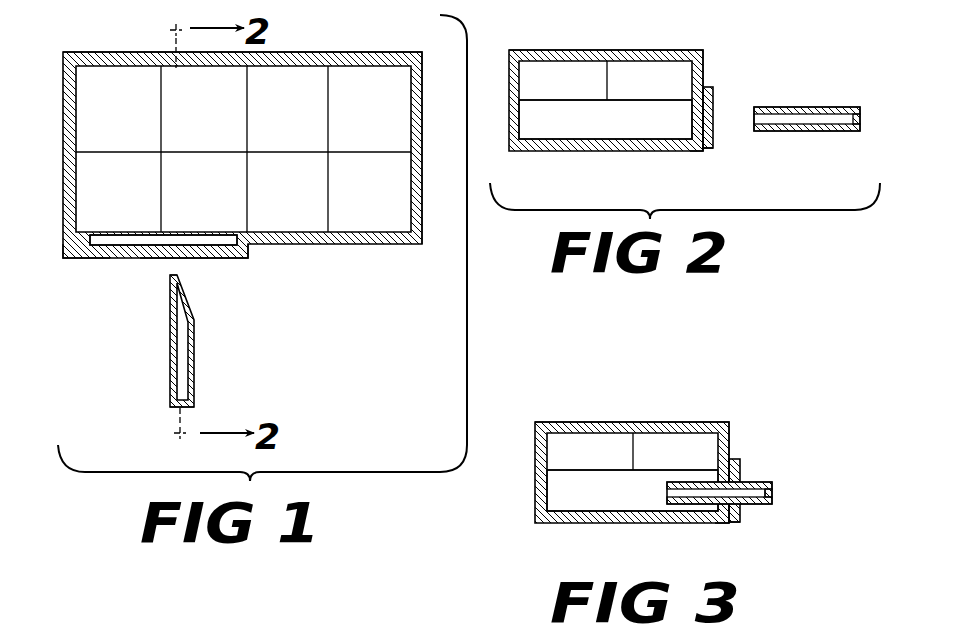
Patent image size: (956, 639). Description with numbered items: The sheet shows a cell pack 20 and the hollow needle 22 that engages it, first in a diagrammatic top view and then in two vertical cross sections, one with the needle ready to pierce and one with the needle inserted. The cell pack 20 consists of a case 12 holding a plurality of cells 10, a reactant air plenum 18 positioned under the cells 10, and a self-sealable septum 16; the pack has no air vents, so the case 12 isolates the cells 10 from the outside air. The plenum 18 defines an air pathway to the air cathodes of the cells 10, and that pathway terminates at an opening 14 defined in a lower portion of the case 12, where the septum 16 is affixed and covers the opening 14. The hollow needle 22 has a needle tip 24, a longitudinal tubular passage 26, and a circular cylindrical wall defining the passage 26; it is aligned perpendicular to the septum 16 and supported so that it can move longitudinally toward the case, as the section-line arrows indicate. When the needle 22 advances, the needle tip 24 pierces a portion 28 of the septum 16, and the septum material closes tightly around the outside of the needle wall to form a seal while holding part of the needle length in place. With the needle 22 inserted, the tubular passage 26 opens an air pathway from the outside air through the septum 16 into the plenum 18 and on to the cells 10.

In FIG. 1, the cells 10 is at (300, 120).
In FIG. 2, the cells 10 is at (576, 93).
In FIG. 3, the cells 10 is at (609, 463).
In FIG. 1, the case 12 is at (128, 52).
In FIG. 2, the case 12 is at (655, 50).
In FIG. 3, the case 12 is at (635, 422).
In FIG. 1, the opening 14 is at (145, 238).
In FIG. 1, the septum 16 is at (100, 260).
In FIG. 2, the septum 16 is at (712, 152).
In FIG. 3, the septum 16 is at (740, 522).
In FIG. 2, the reactant air plenum 18 is at (617, 134).
In FIG. 3, the reactant air plenum 18 is at (607, 502).
In FIG. 1, the cell pack 20 is at (342, 48).
In FIG. 2, the cell pack 20 is at (722, 43).
In FIG. 3, the cell pack 20 is at (722, 404).
In FIG. 1, the hollow needle 22 is at (194, 340).
In FIG. 2, the hollow needle 22 is at (808, 107).
In FIG. 3, the hollow needle 22 is at (756, 482).
In FIG. 1, the needle tip 24 is at (170, 276).
In FIG. 1, the longitudinal tubular passage 26 is at (182, 405).
In FIG. 2, the longitudinal tubular passage 26 is at (757, 122).
In FIG. 3, the longitudinal tubular passage 26 is at (772, 496).
In FIG. 1, the portion of the septum 28 is at (177, 262).
In FIG. 2, the portion of the septum 28 is at (716, 120).
In FIG. 3, the portion of the septum 28 is at (734, 490).